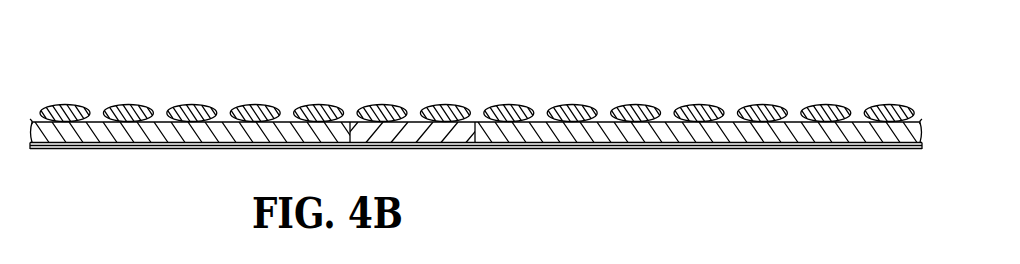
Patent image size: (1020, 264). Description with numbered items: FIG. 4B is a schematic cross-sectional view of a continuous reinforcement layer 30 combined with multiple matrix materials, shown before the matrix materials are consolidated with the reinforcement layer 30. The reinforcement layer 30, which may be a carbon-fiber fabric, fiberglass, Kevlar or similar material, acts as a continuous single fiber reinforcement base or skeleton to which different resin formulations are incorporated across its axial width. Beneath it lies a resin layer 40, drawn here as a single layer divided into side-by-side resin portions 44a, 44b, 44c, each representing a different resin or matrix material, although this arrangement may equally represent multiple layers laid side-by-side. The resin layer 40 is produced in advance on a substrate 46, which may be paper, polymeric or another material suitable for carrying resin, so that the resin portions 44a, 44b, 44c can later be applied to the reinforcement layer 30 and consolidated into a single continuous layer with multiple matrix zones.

The reinforcement layer 30 is at (258, 105).
The resin layer 40 is at (813, 145).
The resin portion 44a is at (217, 133).
The resin portion 44b is at (430, 135).
The resin portion 44c is at (763, 135).
The substrate 46 is at (92, 147).